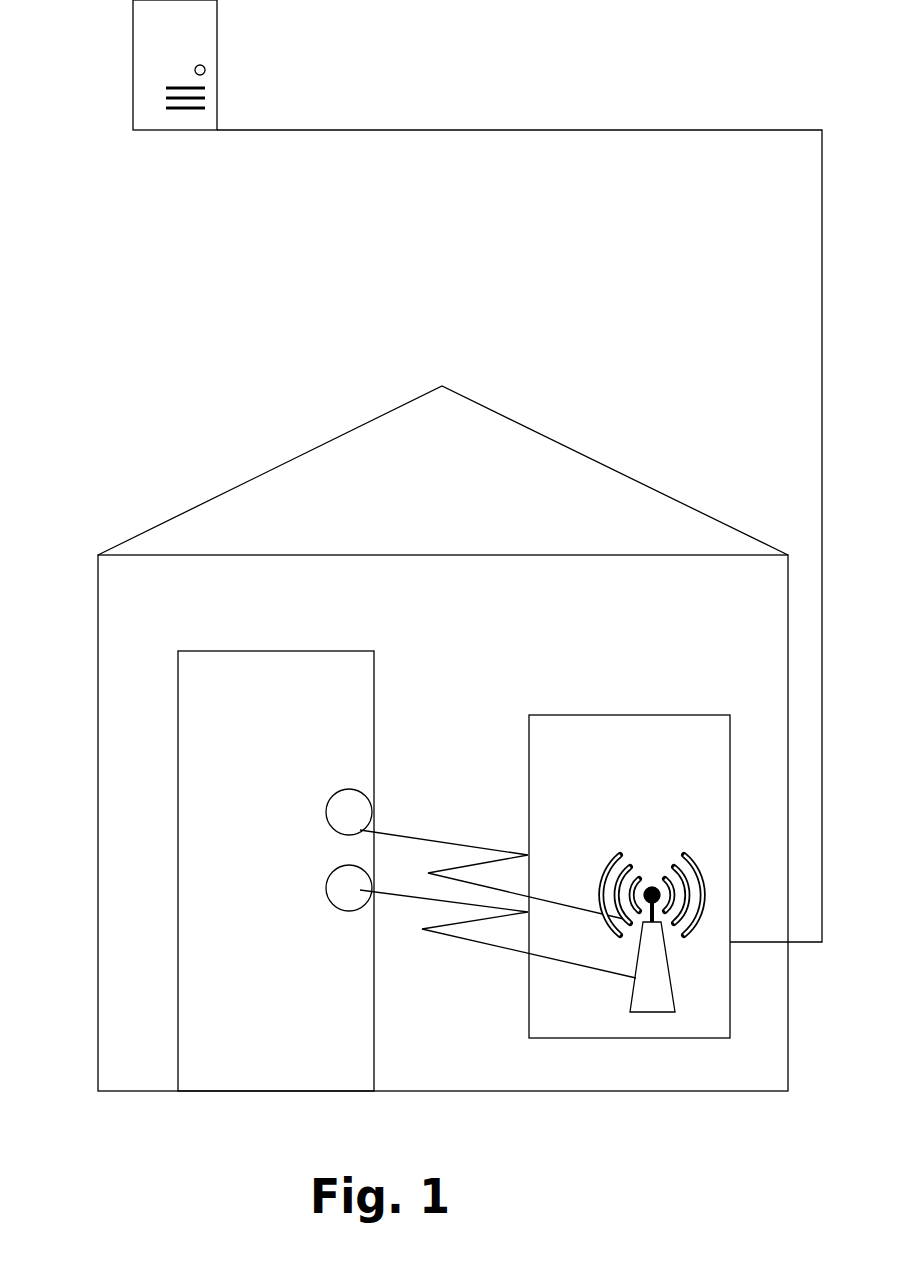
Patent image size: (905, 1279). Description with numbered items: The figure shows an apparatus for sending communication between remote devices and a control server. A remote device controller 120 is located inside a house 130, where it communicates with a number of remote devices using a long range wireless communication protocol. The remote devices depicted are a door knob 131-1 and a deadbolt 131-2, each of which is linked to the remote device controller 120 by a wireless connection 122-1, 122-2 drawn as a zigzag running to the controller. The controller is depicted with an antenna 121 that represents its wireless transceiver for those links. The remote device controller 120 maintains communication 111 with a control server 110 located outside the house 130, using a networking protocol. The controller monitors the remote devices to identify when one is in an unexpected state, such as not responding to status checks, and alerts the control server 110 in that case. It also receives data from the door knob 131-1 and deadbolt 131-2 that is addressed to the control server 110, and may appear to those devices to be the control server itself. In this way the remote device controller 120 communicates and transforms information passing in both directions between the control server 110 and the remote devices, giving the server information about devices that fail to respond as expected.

The control server 110 is at (173, 32).
The communication 111 is at (691, 130).
The remote device controller 120 is at (629, 876).
The antenna / wireless transceiver 121 is at (660, 975).
The wireless connection 122-1 is at (510, 945).
The wireless connection 122-2 is at (398, 830).
The house 130 is at (313, 588).
The door knob 131-1 is at (348, 888).
The deadbolt 131-2 is at (349, 812).